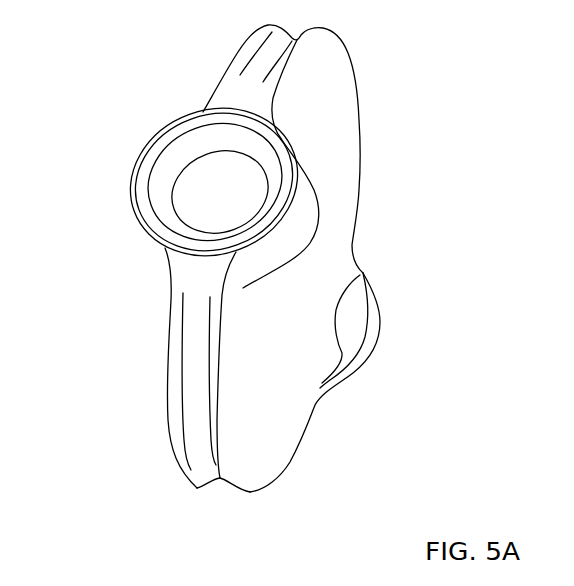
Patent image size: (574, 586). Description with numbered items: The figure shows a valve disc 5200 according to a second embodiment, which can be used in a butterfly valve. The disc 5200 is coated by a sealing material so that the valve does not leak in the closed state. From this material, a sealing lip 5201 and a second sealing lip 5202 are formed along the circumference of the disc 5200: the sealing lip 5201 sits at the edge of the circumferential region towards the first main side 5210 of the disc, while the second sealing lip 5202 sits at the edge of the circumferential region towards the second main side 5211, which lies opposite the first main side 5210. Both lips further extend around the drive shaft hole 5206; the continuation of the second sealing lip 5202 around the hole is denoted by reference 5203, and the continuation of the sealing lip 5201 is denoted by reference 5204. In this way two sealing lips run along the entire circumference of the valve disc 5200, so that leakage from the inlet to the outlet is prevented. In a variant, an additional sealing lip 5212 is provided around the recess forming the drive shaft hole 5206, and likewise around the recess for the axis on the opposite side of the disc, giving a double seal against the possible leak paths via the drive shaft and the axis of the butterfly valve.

The valve disc 5200 is at (429, 79).
The sealing lip 5201 is at (248, 494).
The second sealing lip 5202 is at (197, 492).
The continuation of sealing lip 5203 is at (131, 196).
The continuation of sealing lip 5204 is at (298, 178).
The drive shaft hole 5206 is at (220, 182).
The first main side 5210 is at (287, 413).
The second main side 5211 is at (164, 330).
The additional sealing lip 5212 is at (146, 154).